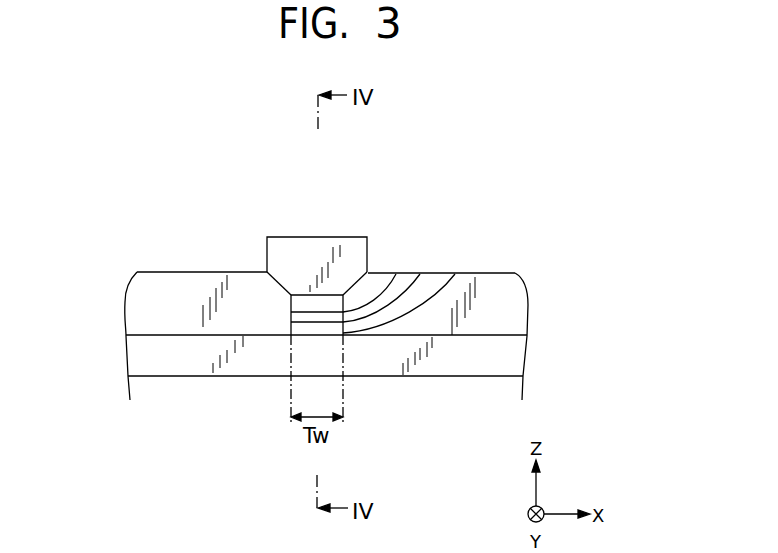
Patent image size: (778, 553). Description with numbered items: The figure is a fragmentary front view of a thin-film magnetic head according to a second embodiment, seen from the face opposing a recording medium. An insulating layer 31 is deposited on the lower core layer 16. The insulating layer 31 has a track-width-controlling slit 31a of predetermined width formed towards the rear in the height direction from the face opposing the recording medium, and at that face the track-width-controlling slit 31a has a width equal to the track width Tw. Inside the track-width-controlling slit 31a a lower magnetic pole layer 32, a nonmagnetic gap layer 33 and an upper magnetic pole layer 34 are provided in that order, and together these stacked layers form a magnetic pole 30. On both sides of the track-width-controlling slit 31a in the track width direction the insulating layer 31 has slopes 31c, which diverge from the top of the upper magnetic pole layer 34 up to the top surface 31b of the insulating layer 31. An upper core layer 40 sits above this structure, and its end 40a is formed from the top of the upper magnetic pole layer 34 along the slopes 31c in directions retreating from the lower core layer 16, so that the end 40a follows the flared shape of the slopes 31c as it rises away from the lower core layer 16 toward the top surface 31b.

The lower core layer 16 is at (478, 357).
The magnetic pole 30 is at (394, 253).
The insulating layer 31 is at (155, 312).
The track-width-controlling slit 31a is at (310, 340).
The top surface of the insulating layer 31b is at (155, 272).
The slopes 31c is at (275, 279).
The lower magnetic pole layer 32 is at (393, 215).
The nonmagnetic gap layer 33 is at (420, 274).
The upper magnetic pole layer 34 is at (396, 274).
The upper core layer 40 is at (284, 237).
The end of the upper core layer 40a is at (319, 249).